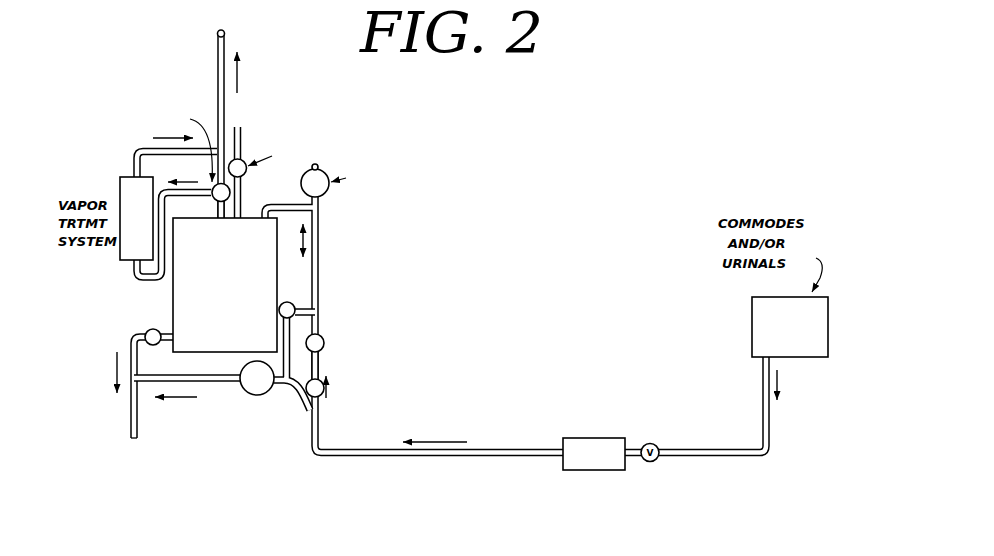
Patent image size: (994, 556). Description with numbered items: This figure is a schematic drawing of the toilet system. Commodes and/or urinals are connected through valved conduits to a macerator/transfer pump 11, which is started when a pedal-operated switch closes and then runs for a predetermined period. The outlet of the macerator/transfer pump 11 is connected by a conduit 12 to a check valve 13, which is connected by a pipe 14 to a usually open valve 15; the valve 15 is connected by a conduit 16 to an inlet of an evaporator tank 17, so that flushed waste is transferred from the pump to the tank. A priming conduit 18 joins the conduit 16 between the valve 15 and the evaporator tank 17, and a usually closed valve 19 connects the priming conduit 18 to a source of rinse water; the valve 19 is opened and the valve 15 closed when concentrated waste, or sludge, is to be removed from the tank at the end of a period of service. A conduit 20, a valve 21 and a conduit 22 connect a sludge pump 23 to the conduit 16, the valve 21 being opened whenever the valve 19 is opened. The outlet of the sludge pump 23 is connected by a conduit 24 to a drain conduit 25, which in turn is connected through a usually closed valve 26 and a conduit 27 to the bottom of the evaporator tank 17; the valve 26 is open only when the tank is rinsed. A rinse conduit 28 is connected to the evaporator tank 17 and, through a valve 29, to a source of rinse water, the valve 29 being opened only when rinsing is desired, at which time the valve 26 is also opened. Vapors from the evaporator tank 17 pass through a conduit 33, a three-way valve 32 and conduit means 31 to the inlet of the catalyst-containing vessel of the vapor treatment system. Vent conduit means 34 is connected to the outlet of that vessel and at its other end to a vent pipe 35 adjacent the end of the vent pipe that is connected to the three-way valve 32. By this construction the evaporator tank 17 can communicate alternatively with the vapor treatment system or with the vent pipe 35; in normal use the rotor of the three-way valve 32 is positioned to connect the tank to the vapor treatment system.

The macerator/transfer pump 11 is at (598, 438).
The conduit 12 is at (428, 459).
The check valve 13 is at (320, 398).
The pipe 14 is at (324, 360).
The valve 15 is at (325, 340).
The conduit 16 is at (322, 248).
The evaporator tank 17 is at (213, 352).
The priming conduit 18 is at (322, 207).
The valve 19 is at (331, 193).
The conduit 20 is at (320, 290).
The valve 21 is at (286, 301).
The conduit 22 is at (299, 408).
The sludge pump 23 is at (241, 386).
The conduit 24 is at (150, 387).
The drain conduit 25 is at (129, 425).
The valve 26 is at (146, 335).
The conduit 27 is at (172, 335).
The rinse conduit 28 is at (243, 192).
The valve 29 is at (244, 161).
The conduit means 31 is at (126, 284).
The 3-way valve 32 is at (231, 193).
The conduit 33 is at (216, 212).
The vent conduit means 34 is at (128, 150).
The vent pipe 35 is at (217, 63).